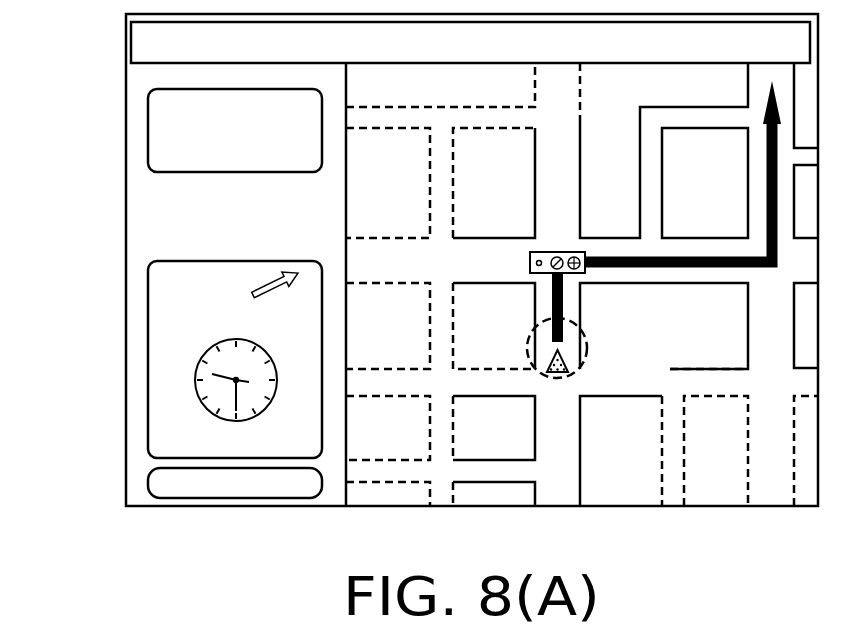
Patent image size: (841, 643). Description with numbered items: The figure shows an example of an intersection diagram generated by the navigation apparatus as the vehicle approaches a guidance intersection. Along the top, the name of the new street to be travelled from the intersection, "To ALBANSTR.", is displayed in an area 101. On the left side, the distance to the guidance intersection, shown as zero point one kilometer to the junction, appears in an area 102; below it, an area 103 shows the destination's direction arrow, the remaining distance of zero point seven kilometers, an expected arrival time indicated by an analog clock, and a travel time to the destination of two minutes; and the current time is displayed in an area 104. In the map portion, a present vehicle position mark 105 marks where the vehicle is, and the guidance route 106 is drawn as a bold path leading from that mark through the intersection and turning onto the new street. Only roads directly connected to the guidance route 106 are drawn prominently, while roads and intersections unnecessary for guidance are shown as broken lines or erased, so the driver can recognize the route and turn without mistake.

The area 101 is at (148, 49).
The area 102 is at (152, 140).
The area 103 is at (163, 370).
The area 104 is at (165, 487).
The present vehicle position mark 105 is at (570, 356).
The guidance route 106 is at (694, 258).